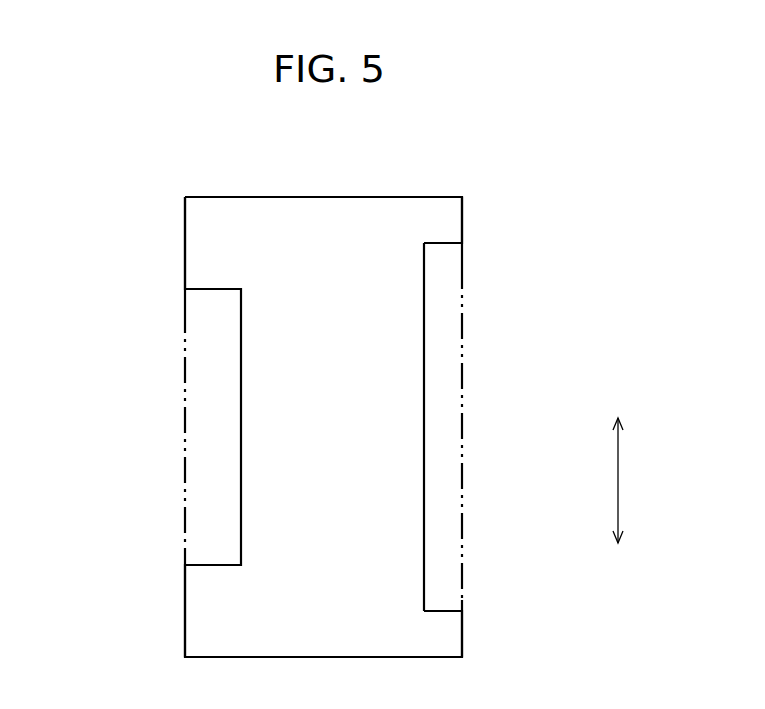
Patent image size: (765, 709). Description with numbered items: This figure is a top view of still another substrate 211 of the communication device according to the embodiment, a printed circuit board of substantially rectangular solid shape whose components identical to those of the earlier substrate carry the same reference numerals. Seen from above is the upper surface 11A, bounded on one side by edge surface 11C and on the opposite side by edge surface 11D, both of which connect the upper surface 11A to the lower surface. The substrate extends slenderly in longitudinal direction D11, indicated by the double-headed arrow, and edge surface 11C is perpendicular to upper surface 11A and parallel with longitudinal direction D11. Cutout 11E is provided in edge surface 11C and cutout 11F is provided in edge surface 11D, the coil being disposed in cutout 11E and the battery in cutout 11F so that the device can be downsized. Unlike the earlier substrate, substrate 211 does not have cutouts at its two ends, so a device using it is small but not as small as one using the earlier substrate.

The substrate 211 is at (248, 160).
The upper surface 11A is at (385, 221).
The edge surface 11C is at (185, 264).
The edge surface 11D is at (462, 234).
The cutout 11E is at (241, 428).
The cutout 11F is at (424, 420).
The longitudinal direction D11 is at (619, 480).